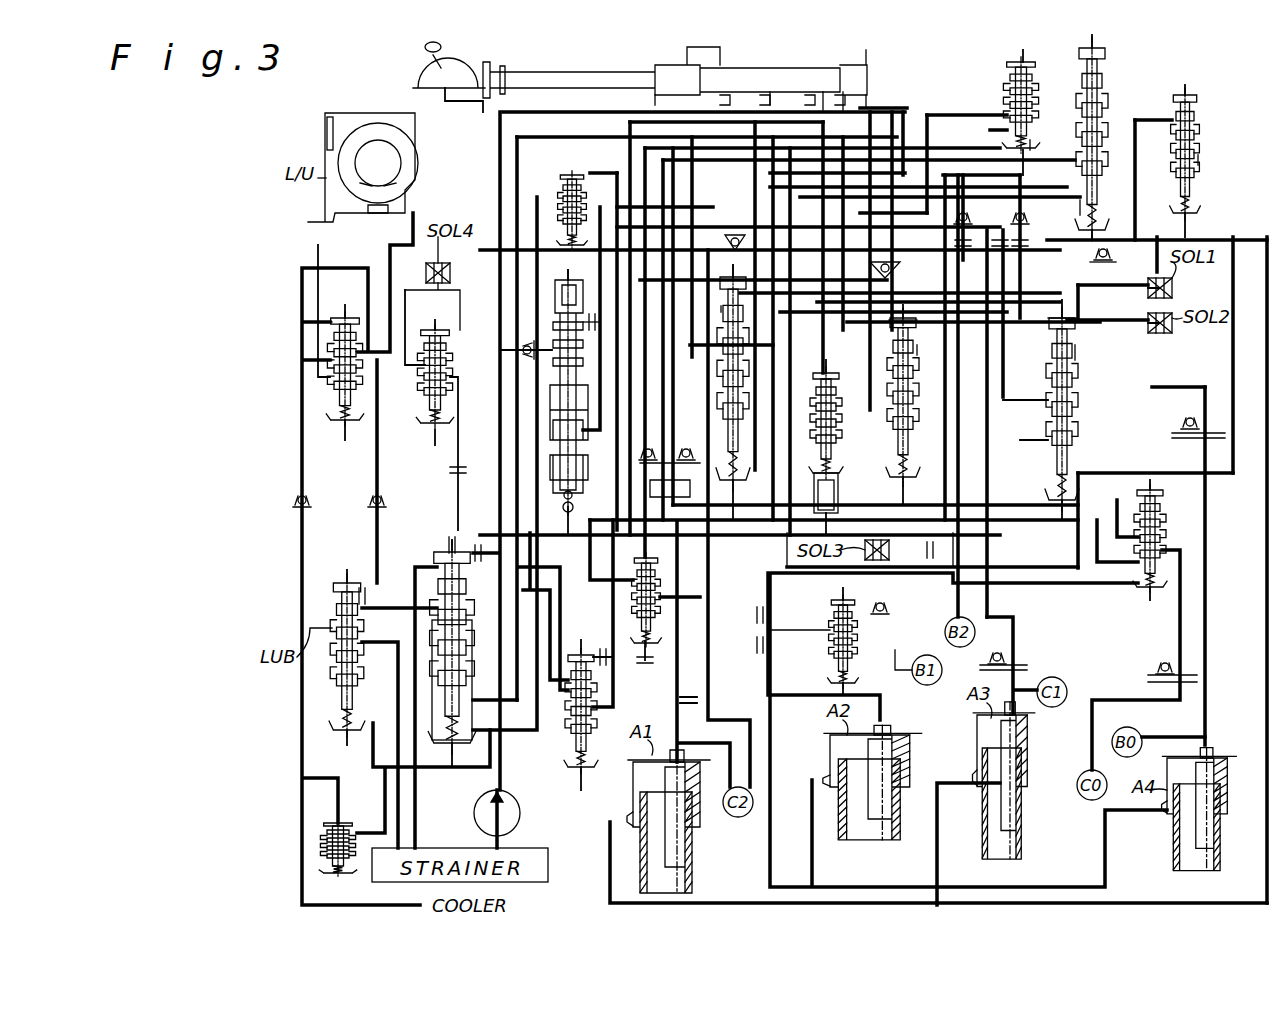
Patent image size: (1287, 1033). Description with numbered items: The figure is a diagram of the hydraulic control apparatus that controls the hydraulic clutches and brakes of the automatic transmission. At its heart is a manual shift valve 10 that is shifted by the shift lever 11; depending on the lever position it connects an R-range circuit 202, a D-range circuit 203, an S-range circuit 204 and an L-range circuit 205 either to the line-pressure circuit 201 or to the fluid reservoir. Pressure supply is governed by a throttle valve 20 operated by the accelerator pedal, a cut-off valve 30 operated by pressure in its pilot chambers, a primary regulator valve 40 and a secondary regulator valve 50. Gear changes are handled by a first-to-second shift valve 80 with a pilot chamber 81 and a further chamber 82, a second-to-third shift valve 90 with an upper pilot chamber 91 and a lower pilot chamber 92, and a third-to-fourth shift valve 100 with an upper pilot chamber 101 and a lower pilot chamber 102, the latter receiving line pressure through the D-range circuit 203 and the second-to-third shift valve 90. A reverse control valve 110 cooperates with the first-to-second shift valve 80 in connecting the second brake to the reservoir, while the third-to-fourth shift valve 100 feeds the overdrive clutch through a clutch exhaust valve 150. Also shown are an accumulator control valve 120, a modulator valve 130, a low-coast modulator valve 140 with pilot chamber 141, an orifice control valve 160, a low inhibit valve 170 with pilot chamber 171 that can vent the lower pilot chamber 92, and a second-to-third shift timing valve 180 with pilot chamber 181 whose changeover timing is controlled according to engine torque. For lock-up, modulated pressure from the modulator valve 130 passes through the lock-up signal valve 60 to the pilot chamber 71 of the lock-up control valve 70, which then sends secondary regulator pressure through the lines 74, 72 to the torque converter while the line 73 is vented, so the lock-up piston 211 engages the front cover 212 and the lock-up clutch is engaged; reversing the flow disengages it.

The manual shift valve 10 is at (634, 53).
The shift lever 11 is at (428, 62).
The throttle valve 20 is at (553, 289).
The cut-off valve 30 is at (561, 180).
The primary regulator valve 40 is at (433, 556).
The secondary regulator valve 50 is at (340, 571).
The lock-up signal valve 60 is at (445, 325).
The lock-up control valve 70 is at (339, 305).
The pilot chamber 71 is at (315, 322).
The line 72 is at (384, 355).
The line 73 is at (315, 360).
The line 74 is at (379, 430).
The 1-2 shift valve 80 is at (915, 450).
The pilot chamber 81 is at (890, 322).
The pilot chamber 82 is at (920, 350).
The 2-3 shift valve 90 is at (737, 470).
The upper pilot chamber 91 is at (730, 277).
The lower pilot chamber 92 is at (721, 308).
The 3-4 shift valve 100 is at (1057, 511).
The upper pilot chamber 101 is at (1072, 312).
The lower pilot chamber 102 is at (1076, 355).
The reverse control valve 110 is at (847, 484).
The accumulator control valve 120 is at (590, 643).
The modulator valve 130 is at (655, 654).
The low-coast modulator valve 140 is at (1205, 113).
The pilot chamber 141 is at (1200, 160).
The CO exhaust valve 150 is at (1147, 605).
The orifice control valve 160 is at (825, 653).
The low inhibit valve 170 is at (1000, 95).
The pilot chamber 171 is at (1036, 145).
The 2-3 shift timing valve 180 is at (1112, 91).
The pilot chamber 181 is at (1086, 212).
The line-pressure circuit 201 is at (770, 100).
The R-range circuit 202 is at (650, 97).
The D-range circuit 203 is at (822, 101).
The S-range circuit 204 is at (843, 92).
The L-range circuit 205 is at (866, 95).
The lock-up piston 211 is at (340, 118).
The front cover 212 is at (326, 136).